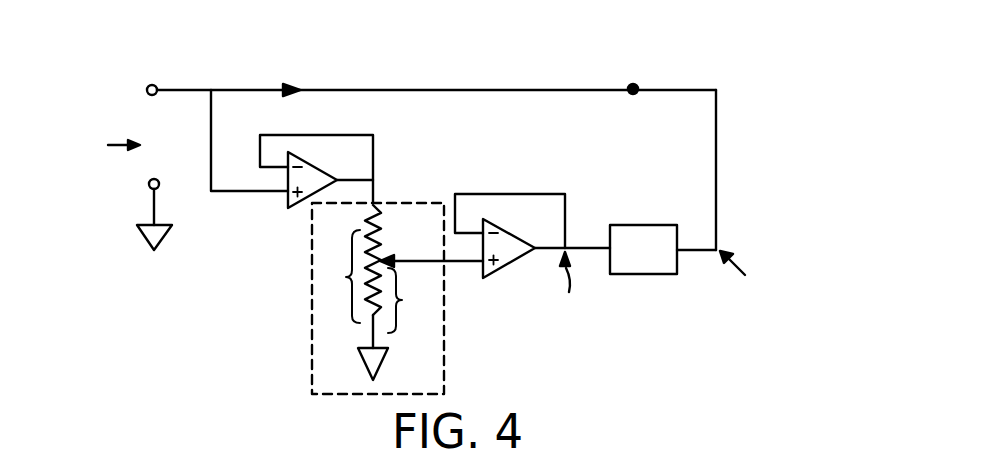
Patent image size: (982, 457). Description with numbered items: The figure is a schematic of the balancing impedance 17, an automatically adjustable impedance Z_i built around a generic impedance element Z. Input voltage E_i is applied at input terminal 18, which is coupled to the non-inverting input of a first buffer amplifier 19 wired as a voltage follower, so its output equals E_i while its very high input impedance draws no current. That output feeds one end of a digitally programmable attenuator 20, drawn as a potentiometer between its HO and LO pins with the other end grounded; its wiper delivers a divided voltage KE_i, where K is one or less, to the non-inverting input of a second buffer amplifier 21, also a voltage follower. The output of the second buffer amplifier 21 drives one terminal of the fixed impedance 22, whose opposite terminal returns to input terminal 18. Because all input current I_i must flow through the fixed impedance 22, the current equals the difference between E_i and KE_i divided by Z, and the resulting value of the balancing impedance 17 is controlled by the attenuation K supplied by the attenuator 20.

The balancing impedance 17 is at (556, 58).
The input terminal 18 is at (158, 87).
The first buffer amplifier 19 is at (325, 165).
The digitally programmable attenuator 20 is at (312, 296).
The second buffer amplifier 21 is at (503, 272).
The fixed impedance 22 is at (645, 275).